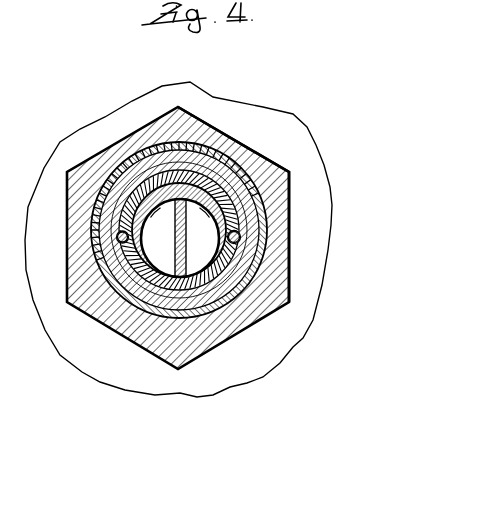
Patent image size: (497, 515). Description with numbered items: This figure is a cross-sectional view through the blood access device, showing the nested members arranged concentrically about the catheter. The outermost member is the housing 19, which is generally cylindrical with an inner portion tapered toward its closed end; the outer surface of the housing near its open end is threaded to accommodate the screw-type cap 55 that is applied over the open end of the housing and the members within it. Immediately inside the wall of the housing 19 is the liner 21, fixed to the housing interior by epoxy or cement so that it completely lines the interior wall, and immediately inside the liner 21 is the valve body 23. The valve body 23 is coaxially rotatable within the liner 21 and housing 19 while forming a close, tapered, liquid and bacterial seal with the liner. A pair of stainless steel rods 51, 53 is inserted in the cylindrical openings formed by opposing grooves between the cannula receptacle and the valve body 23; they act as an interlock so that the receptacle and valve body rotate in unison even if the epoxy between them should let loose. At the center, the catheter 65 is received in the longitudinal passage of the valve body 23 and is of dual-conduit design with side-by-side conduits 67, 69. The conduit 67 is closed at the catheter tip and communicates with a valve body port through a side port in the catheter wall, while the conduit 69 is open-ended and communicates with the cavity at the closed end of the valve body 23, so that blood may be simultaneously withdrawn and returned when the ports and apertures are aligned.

The cap 55 is at (210, 128).
The liner 21 is at (290, 173).
The housing 19 is at (258, 262).
The conduit 69 is at (243, 192).
The conduit 67 is at (150, 207).
The valve body 23 is at (147, 288).
The catheter 65 is at (210, 276).
The rod 53 is at (118, 239).
The rod 51 is at (240, 237).